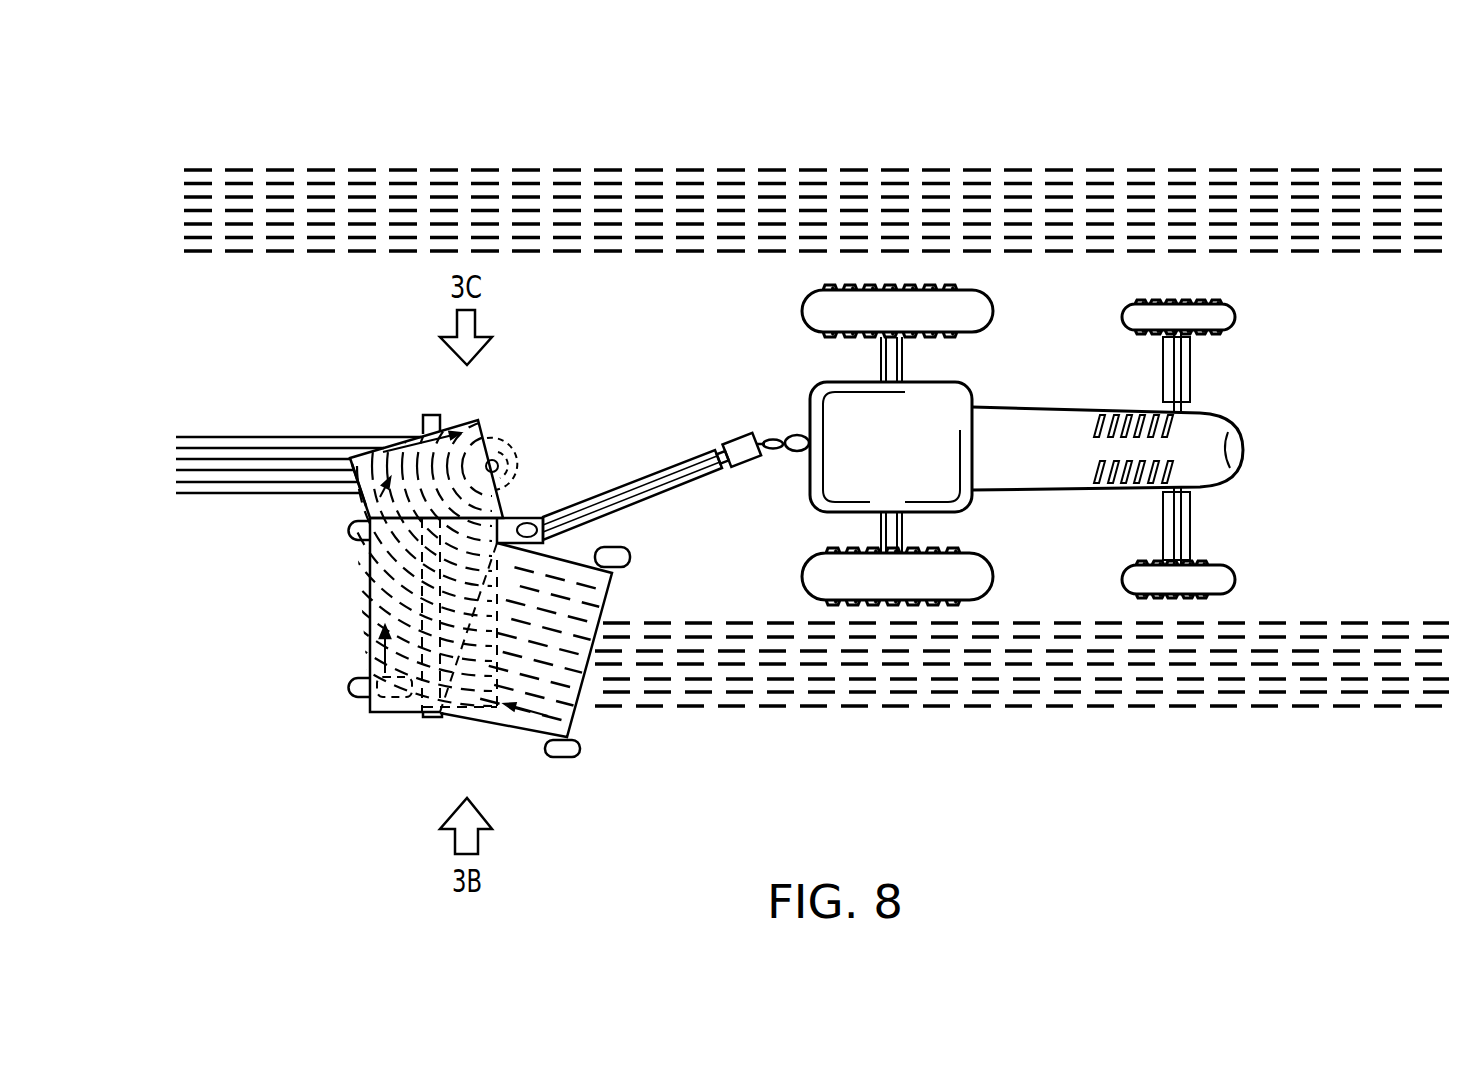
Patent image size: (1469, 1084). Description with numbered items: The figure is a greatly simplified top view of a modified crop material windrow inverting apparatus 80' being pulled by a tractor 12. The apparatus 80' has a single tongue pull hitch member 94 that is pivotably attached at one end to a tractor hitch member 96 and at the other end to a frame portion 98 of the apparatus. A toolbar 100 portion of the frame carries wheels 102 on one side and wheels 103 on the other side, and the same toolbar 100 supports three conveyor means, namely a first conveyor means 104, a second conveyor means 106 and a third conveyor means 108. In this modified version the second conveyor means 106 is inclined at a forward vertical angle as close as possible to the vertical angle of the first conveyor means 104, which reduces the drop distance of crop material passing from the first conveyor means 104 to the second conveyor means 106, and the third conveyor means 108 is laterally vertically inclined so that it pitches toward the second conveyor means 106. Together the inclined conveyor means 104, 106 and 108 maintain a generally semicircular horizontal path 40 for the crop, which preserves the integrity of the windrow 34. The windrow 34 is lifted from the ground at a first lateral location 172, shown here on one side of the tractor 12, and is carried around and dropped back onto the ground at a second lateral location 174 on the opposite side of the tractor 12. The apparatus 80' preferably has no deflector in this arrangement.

The tractor 12 is at (1025, 423).
The windrow 34 is at (1022, 709).
The generally semicircular horizontal path 40 is at (365, 502).
The apparatus 80' is at (403, 584).
The single tongue pull hitch member 94 is at (652, 458).
The tractor hitch member 96 is at (792, 455).
The frame portion 98 is at (563, 545).
The toolbar 100 is at (432, 718).
The wheels 102 is at (352, 538).
The wheels 103 is at (622, 568).
The first conveyor means 104 is at (508, 723).
The second conveyor means 106 is at (374, 613).
The third conveyor means 108 is at (378, 467).
The first lateral location 172 is at (1083, 706).
The second lateral location 174 is at (230, 437).